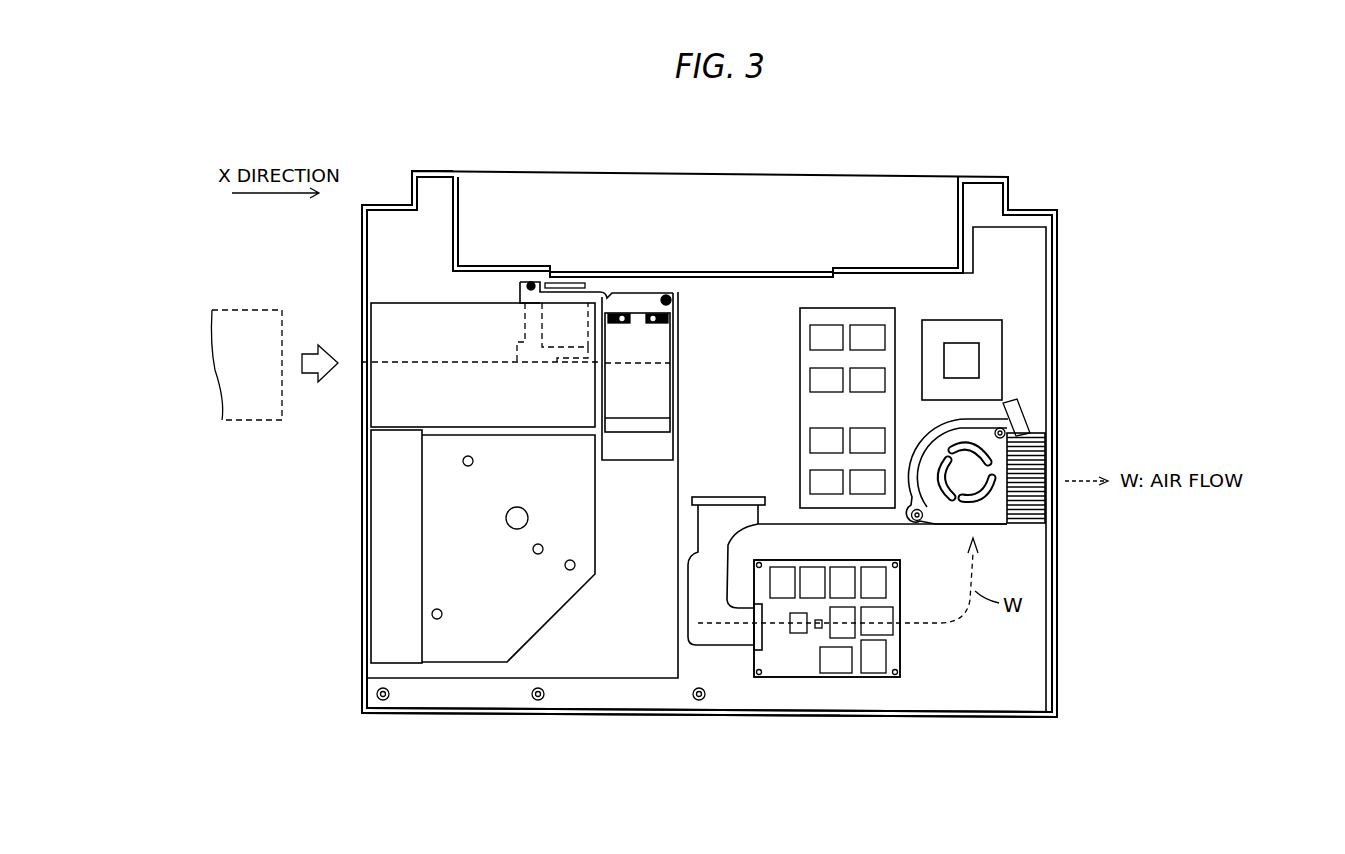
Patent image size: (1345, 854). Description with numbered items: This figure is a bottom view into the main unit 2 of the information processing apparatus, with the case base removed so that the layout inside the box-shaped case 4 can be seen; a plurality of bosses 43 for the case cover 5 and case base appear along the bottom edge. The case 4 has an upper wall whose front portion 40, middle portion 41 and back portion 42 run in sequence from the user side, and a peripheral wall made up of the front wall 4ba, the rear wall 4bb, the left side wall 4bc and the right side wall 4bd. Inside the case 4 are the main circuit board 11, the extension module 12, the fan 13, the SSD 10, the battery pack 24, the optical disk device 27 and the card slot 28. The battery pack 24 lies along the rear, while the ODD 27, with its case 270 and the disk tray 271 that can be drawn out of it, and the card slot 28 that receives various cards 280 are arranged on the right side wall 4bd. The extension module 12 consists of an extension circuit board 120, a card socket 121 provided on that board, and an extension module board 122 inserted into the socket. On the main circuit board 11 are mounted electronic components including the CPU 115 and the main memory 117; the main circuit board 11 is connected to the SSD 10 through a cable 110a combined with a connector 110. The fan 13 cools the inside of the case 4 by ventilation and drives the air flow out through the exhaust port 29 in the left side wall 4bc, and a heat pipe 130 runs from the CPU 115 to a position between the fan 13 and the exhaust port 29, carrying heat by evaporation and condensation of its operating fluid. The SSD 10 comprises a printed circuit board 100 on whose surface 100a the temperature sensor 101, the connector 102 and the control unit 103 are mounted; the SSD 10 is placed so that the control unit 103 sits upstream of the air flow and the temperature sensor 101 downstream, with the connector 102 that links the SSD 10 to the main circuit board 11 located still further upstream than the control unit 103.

The main unit 2 is at (944, 116).
The case 4 is at (347, 250).
The front wall 4ba is at (657, 714).
The rear wall 4bb is at (982, 183).
The left side wall 4bc is at (1058, 345).
The right side wall 4bd is at (362, 288).
The case cover 5 is at (821, 718).
The SSD 10 is at (852, 695).
The main circuit board 11 is at (1035, 267).
The extension module 12 is at (677, 288).
The fan 13 is at (996, 522).
The battery pack 24 is at (770, 190).
The optical disk device 27 is at (443, 595).
The card slot 28 is at (376, 419).
The exhaust port 29 is at (1050, 516).
The front portion 40 is at (598, 713).
The middle portion 41 is at (1058, 400).
The back portion 42 is at (436, 176).
The boss 43 is at (700, 740).
The printed circuit board 100 is at (897, 637).
The surface 100a is at (897, 664).
The temperature sensor 101 is at (815, 632).
The connector 102 is at (755, 641).
The control unit 103 is at (790, 633).
The connector 110 is at (718, 497).
The cable 110a is at (707, 536).
The CPU 115 is at (993, 330).
The main memory 117 is at (893, 320).
The extension circuit board 120 is at (642, 289).
The card socket 121 is at (553, 365).
The extension module board 122 is at (660, 386).
The heat pipe 130 is at (1025, 431).
The case 270 is at (530, 670).
The disk tray 271 is at (432, 553).
The card 280 is at (245, 421).